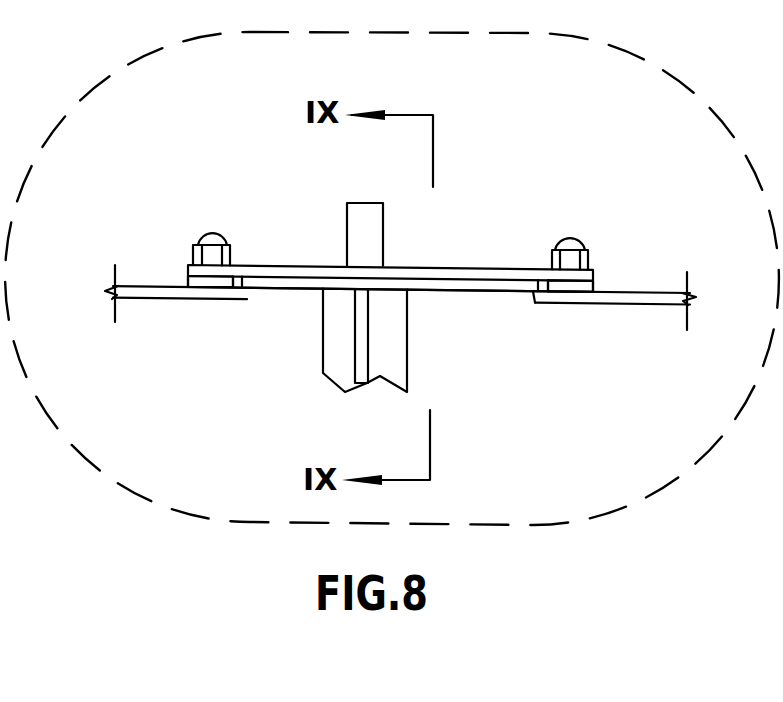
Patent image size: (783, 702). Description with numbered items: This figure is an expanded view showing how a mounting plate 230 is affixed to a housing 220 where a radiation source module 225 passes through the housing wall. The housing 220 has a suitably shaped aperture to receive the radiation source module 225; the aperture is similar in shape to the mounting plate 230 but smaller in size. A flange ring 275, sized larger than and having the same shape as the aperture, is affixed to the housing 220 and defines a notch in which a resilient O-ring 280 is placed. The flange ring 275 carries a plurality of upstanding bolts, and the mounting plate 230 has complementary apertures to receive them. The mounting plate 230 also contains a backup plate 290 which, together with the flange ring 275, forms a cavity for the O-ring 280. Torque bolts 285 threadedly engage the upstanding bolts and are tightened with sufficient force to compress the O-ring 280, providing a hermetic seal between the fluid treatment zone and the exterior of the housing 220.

The housing 220 is at (575, 303).
The radiation source module 225 is at (326, 401).
The mounting plate 230 is at (317, 266).
The flange ring 275 is at (187, 277).
The O-ring 280 is at (248, 296).
The torque bolts 285 is at (205, 233).
The backup plate 290 is at (457, 284).